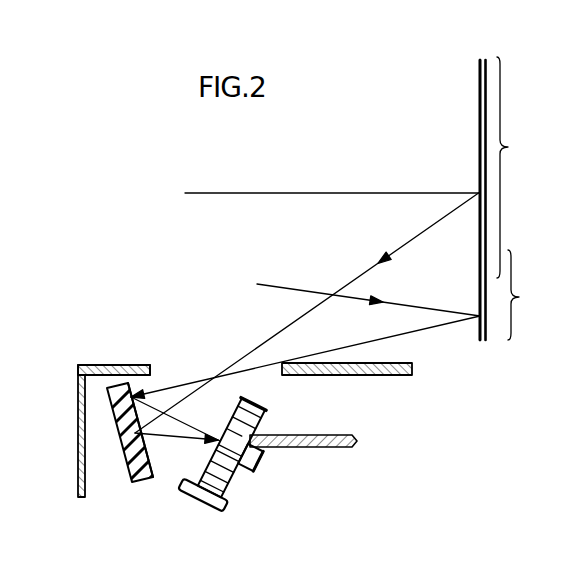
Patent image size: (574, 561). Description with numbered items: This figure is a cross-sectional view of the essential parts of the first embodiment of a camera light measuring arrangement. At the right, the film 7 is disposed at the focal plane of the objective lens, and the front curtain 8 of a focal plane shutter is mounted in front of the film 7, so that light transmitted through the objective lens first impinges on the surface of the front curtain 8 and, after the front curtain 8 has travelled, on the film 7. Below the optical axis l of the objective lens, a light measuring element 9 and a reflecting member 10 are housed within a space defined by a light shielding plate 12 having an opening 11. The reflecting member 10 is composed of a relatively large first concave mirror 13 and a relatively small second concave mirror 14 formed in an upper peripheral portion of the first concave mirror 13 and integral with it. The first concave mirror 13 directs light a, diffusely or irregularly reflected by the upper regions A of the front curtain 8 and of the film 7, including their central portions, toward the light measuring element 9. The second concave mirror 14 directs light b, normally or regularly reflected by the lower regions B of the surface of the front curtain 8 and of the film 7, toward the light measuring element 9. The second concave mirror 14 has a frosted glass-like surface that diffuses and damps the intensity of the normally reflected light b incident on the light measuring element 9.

The film 7 is at (486, 62).
The front curtain 8 is at (478, 68).
The light measuring element 9 is at (252, 418).
The reflecting member 10 is at (138, 485).
The opening 11 is at (200, 372).
The light shielding plate 12 is at (78, 436).
The first concave mirror 13 is at (149, 458).
The second concave mirror 14 is at (130, 365).
The light ray a is at (420, 234).
The normally reflected light b is at (452, 323).
The optical axis l is at (240, 193).
The upper regions A is at (513, 167).
The lower regions B is at (526, 295).